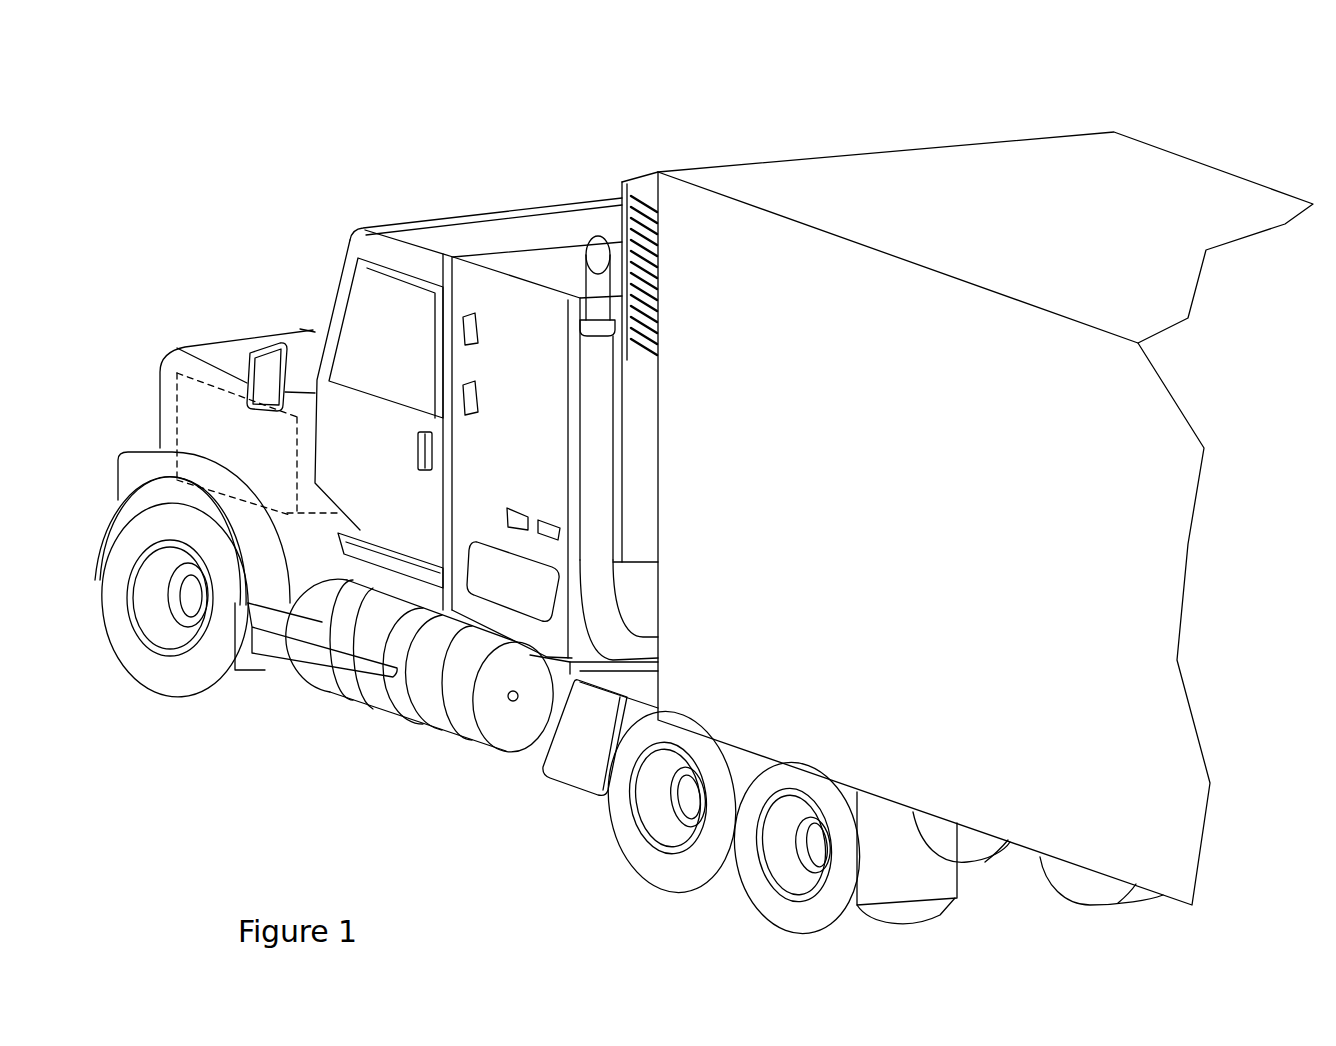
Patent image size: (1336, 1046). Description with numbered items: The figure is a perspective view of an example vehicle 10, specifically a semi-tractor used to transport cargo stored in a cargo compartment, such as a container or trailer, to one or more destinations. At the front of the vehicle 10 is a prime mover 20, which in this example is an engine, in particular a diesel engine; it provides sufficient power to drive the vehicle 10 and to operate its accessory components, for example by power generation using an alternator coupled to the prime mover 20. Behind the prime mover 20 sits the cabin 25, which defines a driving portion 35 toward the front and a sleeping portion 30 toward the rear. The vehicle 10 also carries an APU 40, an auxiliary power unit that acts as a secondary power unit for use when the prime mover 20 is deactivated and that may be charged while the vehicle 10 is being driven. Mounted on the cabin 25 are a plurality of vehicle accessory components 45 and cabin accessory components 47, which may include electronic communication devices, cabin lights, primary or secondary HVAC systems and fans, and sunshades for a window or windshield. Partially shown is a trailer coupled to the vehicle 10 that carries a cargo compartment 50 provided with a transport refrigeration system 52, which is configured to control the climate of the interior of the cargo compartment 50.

The vehicle 10 is at (445, 134).
The prime mover 20 is at (190, 340).
The cabin 25 is at (345, 248).
The sleeping portion 30 is at (542, 262).
The driving portion 35 is at (409, 208).
The APU 40 is at (575, 758).
The vehicle accessory components 45 is at (463, 382).
The cabin accessory components 47 is at (548, 541).
The cargo compartment 50 is at (864, 190).
The transport refrigeration system (TRS) 52 is at (650, 170).